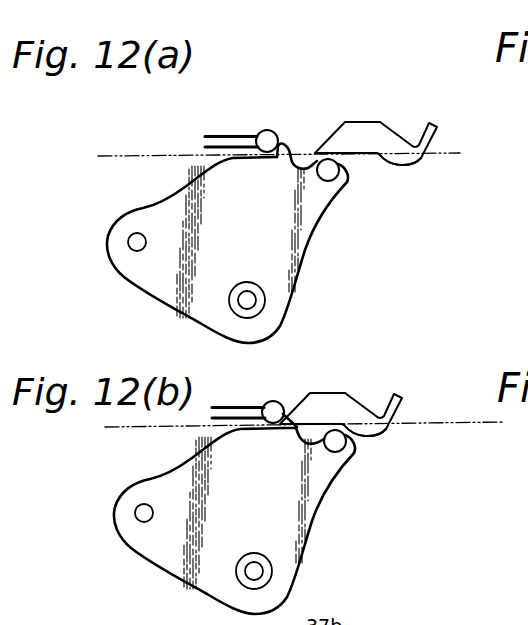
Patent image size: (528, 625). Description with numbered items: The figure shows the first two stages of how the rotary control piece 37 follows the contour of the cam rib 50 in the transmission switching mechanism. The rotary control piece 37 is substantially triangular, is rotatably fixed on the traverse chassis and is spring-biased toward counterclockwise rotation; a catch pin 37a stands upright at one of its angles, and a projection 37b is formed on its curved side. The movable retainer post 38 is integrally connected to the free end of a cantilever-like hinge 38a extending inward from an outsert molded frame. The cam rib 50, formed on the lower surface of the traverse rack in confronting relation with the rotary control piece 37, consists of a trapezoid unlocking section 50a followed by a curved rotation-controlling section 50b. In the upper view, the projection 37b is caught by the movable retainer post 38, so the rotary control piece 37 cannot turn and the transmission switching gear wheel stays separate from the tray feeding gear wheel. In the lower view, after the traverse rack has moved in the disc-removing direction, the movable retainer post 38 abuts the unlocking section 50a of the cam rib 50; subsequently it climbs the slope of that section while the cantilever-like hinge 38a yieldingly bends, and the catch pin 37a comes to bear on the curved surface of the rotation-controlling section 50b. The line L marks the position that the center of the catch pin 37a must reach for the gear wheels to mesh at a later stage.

In FIG. 12A, the rotary control piece 37 is at (304, 238).
In FIG. 12B, the rotary control piece 37 is at (309, 500).
In FIG. 12A, the catch pin 37a is at (328, 170).
In FIG. 12B, the catch pin 37a is at (340, 444).
In FIG. 12A, the projection 37b is at (291, 143).
In FIG. 12B, the projection 37b is at (303, 412).
In FIG. 12A, the movable retainer post 38 is at (267, 141).
In FIG. 12B, the movable retainer post 38 is at (273, 412).
In FIG. 12A, the cantilever-like hinge 38a is at (223, 134).
In FIG. 12B, the cantilever-like hinge 38a is at (243, 410).
In FIG. 12A, the cam rib 50 is at (403, 124).
In FIG. 12B, the cam rib 50 is at (367, 396).
In FIG. 12A, the trapezoid unlocking section 50a is at (367, 126).
In FIG. 12B, the trapezoid unlocking section 50a is at (332, 396).
In FIG. 12A, the curved rotation-controlling section 50b is at (410, 161).
In FIG. 12B, the curved rotation-controlling section 50b is at (377, 437).
In FIG. 12A, the line L is at (445, 143).
In FIG. 12B, the line L is at (417, 413).